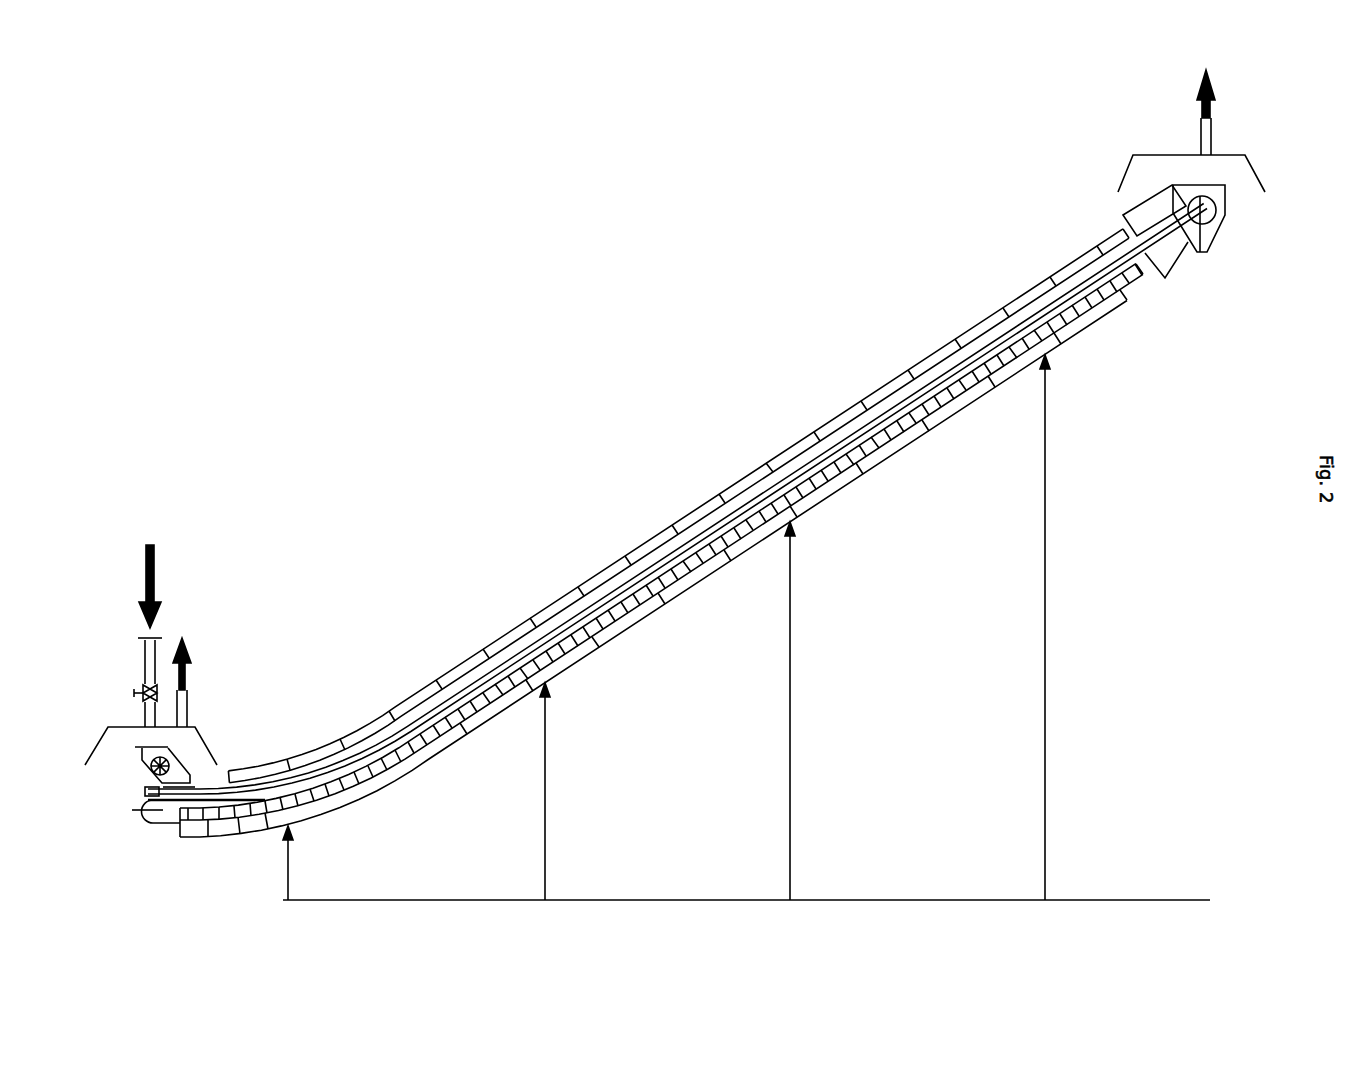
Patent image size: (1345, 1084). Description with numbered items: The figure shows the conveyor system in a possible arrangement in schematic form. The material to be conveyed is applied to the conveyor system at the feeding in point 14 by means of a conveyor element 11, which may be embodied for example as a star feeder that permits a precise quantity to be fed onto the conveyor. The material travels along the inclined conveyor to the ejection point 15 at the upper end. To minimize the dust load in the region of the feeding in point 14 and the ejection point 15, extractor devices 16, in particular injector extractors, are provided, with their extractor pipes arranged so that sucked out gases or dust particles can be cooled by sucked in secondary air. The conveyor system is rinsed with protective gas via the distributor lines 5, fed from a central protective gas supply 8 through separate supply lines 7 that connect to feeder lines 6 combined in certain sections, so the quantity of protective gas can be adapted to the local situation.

The distributor line 5 is at (486, 690).
The feeder line 6 is at (368, 792).
The supply line 7 is at (288, 875).
The central protective gas supply 8 is at (872, 900).
The conveyor element 11 is at (180, 755).
The feeding in point 14 is at (168, 850).
The ejection point 15 is at (1220, 242).
The extractor device 16 is at (207, 727).